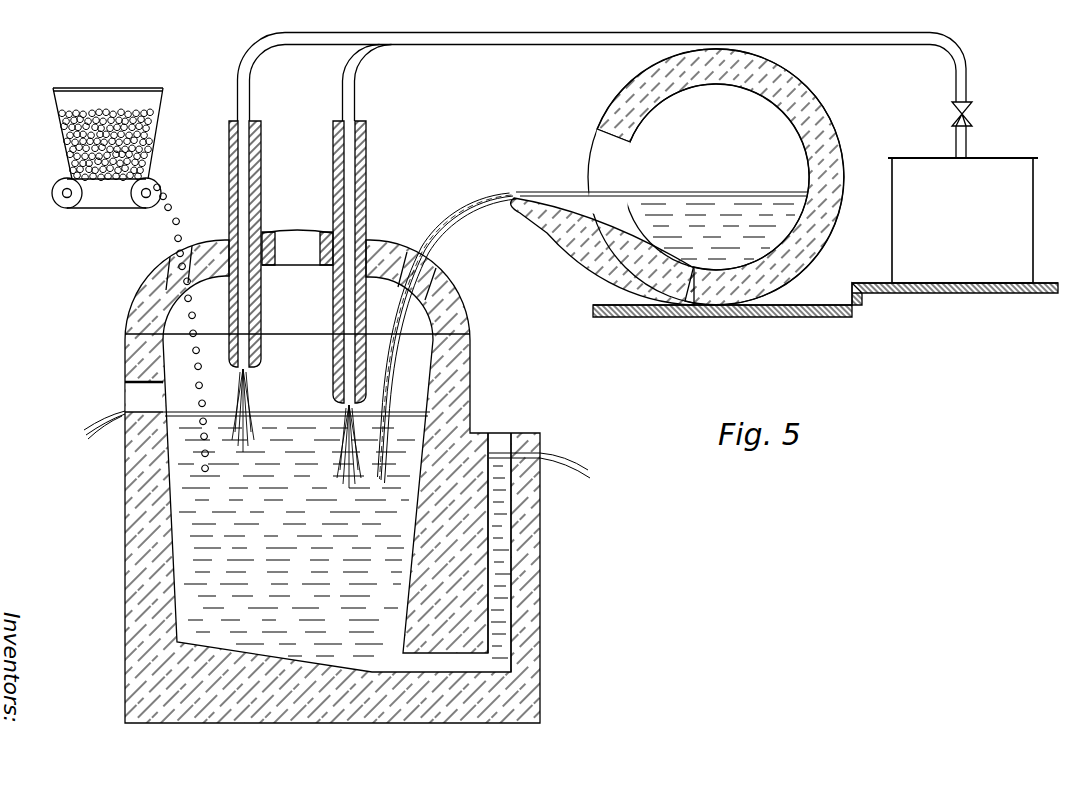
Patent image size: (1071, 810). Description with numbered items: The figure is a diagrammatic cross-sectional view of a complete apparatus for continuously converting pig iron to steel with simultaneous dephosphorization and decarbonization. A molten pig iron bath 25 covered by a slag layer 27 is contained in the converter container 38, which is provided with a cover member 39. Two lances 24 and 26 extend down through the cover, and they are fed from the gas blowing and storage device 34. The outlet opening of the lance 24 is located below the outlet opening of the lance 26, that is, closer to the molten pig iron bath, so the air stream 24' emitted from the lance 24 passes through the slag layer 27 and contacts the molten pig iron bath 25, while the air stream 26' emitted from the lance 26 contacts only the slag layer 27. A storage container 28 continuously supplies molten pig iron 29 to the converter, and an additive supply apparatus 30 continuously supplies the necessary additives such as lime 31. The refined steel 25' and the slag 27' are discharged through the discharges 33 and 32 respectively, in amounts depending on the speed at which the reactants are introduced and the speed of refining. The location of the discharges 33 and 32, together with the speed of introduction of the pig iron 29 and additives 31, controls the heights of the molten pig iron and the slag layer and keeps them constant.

The lance 24 is at (369, 223).
The air stream 24' is at (339, 470).
The molten pig iron bath 25 is at (482, 555).
The steel 25' is at (573, 466).
The lance 26 is at (597, 200).
The air stream 26' is at (269, 410).
The slag layer 27 is at (256, 534).
The slag 27' is at (82, 421).
The storage container 28 is at (817, 118).
The molten pig iron 29 is at (457, 227).
The additive supply apparatus 30 is at (155, 133).
The additives 31 is at (177, 207).
The discharge 32 is at (135, 395).
The discharge 33 is at (530, 446).
The gas blowing and storage device 34 is at (955, 265).
The converter container 38 is at (142, 577).
The cover member 39 is at (456, 313).